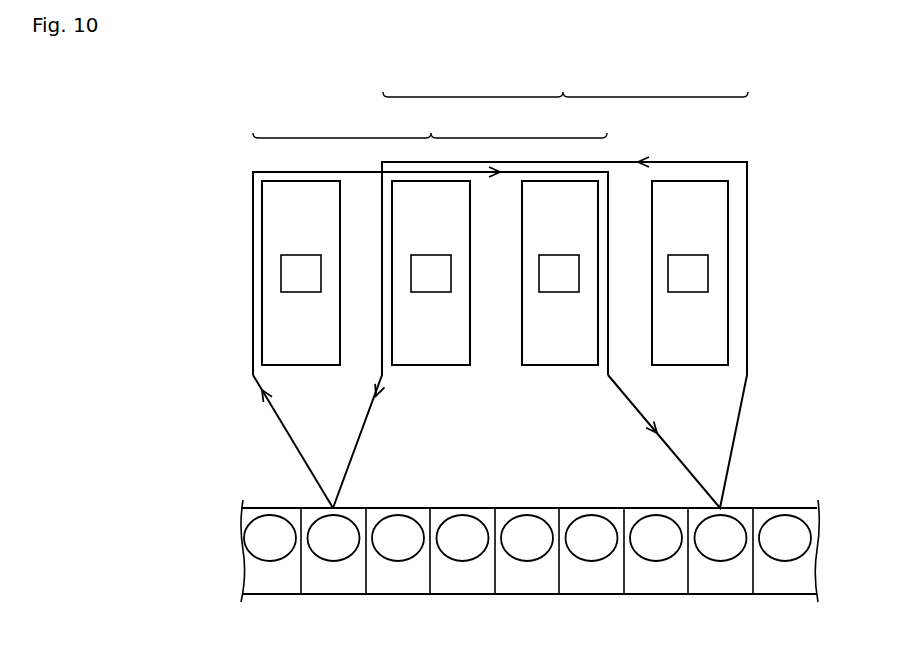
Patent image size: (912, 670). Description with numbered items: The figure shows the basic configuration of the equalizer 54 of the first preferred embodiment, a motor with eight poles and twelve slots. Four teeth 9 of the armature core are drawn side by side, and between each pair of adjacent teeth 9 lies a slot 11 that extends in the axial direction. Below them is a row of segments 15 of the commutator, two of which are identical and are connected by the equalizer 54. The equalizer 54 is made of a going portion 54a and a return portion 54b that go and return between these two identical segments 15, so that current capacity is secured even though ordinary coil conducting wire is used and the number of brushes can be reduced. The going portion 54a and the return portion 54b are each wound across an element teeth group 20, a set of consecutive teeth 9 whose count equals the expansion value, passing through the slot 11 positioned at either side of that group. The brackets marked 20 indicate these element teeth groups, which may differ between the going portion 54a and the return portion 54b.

The element teeth group 20 is at (500, 99).
The equalizer 54 is at (253, 250).
The going portion 54a is at (297, 452).
The return portion 54b is at (735, 432).
The teeth 9 is at (728, 215).
The slot 11 is at (497, 358).
The segment 15 is at (591, 594).